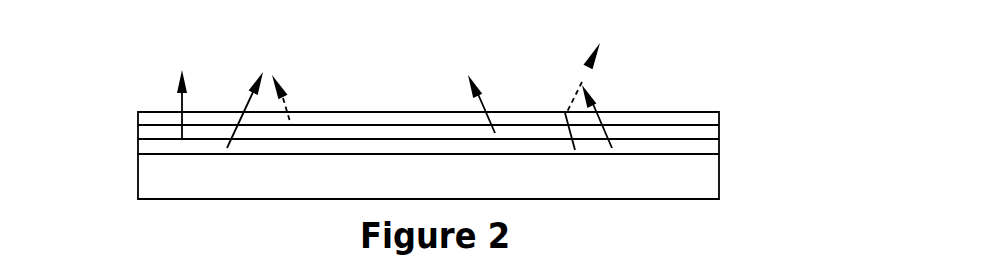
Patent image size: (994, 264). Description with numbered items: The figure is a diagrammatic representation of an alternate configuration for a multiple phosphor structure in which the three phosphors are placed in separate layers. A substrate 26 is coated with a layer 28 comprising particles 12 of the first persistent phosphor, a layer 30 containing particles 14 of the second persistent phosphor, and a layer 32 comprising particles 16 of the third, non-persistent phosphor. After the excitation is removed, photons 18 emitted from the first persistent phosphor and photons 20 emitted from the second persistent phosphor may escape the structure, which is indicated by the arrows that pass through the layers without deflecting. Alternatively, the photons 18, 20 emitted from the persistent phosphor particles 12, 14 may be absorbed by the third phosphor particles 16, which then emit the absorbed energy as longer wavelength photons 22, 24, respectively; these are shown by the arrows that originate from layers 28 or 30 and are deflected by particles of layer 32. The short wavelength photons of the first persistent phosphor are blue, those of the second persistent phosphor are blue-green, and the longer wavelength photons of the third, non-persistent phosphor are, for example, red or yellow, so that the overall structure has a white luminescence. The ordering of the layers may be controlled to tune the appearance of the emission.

The particles of the first persistent phosphor 12 is at (715, 145).
The particles of the second persistent phosphor 14 is at (720, 133).
The particles of the third non-persistent phosphor 16 is at (147, 118).
The photons emitted from the first persistent phosphor 18 is at (245, 108).
The photons emitted from the second persistent phosphor 20 is at (498, 132).
The longer wavelength photons 22 is at (583, 77).
The longer wavelength photons 24 is at (285, 96).
The substrate 26 is at (708, 175).
The layer comprising particles of the first persistent phosphor 28 is at (147, 148).
The layer containing particles of the second persistent phosphor 30 is at (704, 130).
The layer comprising particles of the third non-persistent phosphor 32 is at (688, 118).